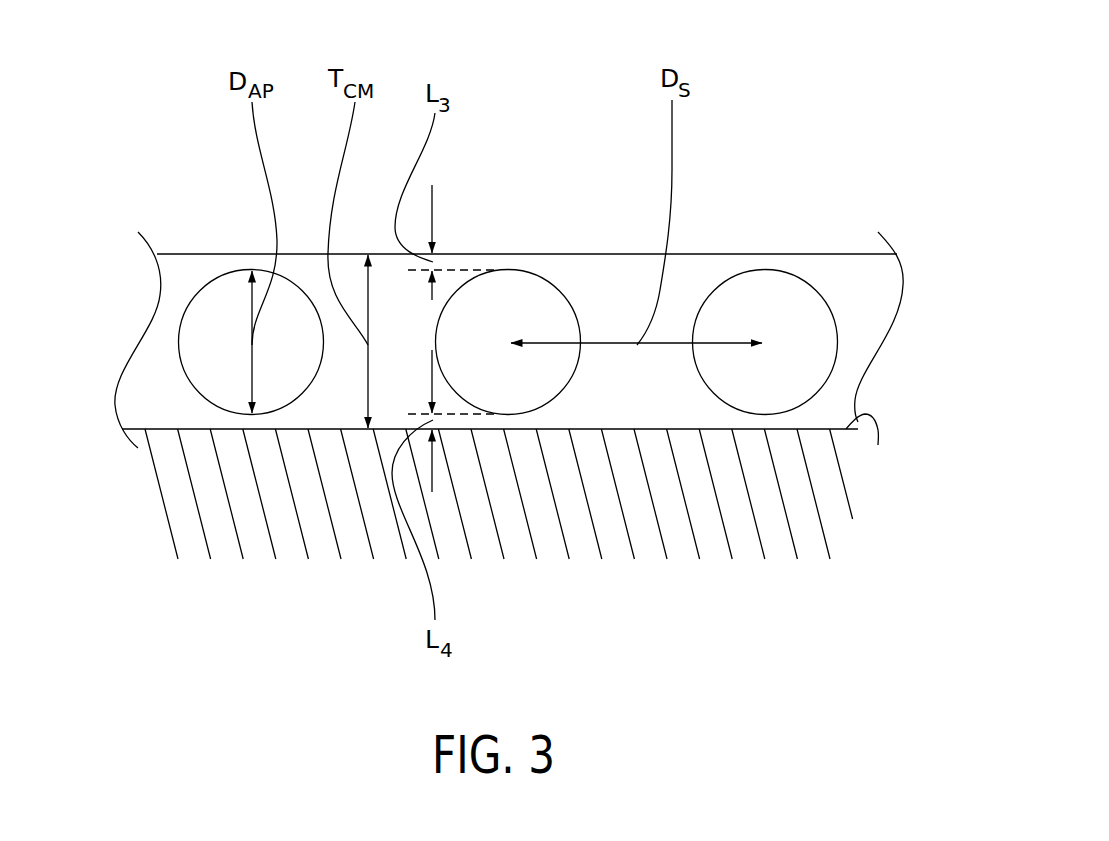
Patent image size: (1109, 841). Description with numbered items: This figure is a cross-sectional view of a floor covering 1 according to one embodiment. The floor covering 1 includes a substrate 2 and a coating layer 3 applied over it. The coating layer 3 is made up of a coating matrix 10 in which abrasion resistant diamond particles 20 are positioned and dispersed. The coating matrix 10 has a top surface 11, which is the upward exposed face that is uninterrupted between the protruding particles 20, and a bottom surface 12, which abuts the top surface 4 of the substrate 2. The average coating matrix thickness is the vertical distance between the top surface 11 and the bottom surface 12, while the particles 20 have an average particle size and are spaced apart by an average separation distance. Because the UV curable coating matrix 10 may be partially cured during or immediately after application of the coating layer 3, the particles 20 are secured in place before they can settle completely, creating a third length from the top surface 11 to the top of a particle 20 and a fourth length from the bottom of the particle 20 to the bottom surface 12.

The floor covering 1 is at (910, 129).
The substrate 2 is at (190, 536).
The coating layer 3 is at (915, 291).
The top surface of the substrate 4 is at (878, 445).
The coating matrix 10 is at (862, 278).
The top surface of the coating matrix 11 is at (180, 253).
The bottom surface of the coating matrix 12 is at (173, 430).
The abrasion resistant particles 20 is at (219, 319).